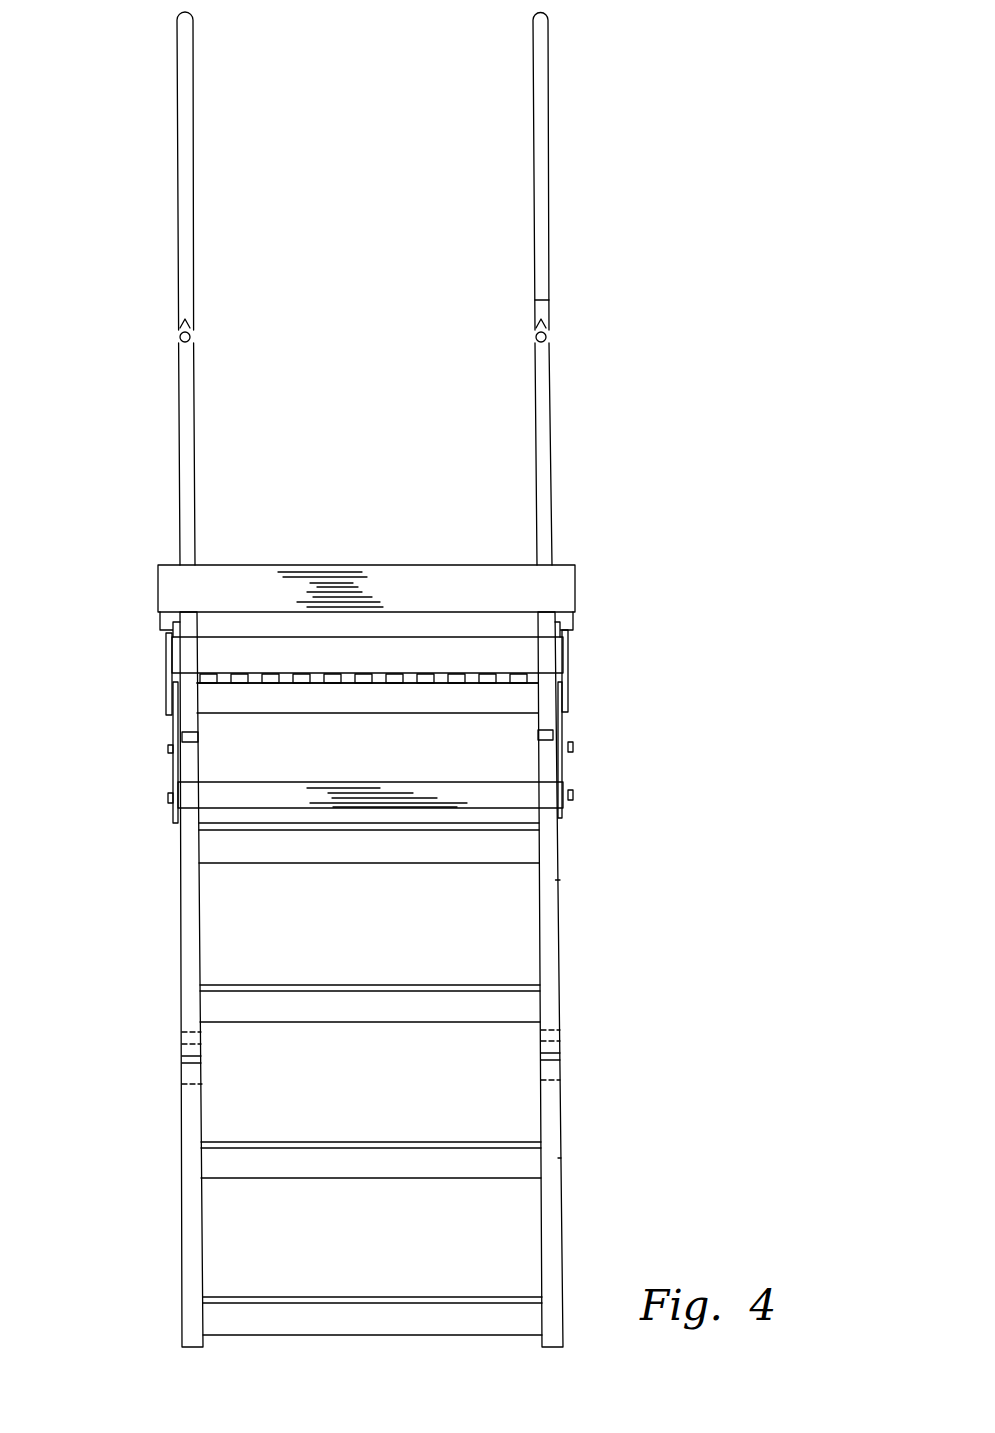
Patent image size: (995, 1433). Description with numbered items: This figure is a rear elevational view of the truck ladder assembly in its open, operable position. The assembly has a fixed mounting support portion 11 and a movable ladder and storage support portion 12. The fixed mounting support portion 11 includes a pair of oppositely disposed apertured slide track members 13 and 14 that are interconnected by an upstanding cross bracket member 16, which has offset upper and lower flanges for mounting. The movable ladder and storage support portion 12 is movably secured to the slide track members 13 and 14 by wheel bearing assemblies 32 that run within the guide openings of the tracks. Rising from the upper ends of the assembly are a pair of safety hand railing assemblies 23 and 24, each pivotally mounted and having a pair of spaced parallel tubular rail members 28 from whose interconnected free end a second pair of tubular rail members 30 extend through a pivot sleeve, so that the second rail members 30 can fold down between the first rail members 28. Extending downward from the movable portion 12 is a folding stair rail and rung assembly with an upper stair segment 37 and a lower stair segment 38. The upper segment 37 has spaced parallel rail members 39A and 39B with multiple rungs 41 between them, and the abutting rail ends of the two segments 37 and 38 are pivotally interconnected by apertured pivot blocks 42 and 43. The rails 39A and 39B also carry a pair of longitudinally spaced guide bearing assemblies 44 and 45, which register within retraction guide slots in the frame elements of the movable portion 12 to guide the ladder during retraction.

The fixed mounting support portion 11 is at (146, 676).
The movable ladder and storage support portion 12 is at (144, 800).
The slide track member 13 is at (163, 629).
The slide track member 14 is at (565, 628).
The cross bracket member 16 is at (557, 592).
The safety hand railing assembly 23 is at (586, 299).
The safety hand railing assembly 24 is at (166, 277).
The tubular rail member 28 is at (186, 417).
The second tubular rail member 30 is at (185, 207).
The wheel bearing assembly 32 is at (583, 673).
The upper stair segment 37 is at (572, 880).
The stair segment 38 is at (572, 1157).
The rail member 39A is at (551, 960).
The rail member 39B is at (194, 947).
The rung 41 is at (360, 848).
The apertured pivot block 42 is at (551, 1041).
The apertured pivot block 43 is at (195, 1044).
The guide bearing assembly 44 is at (573, 748).
The guide bearing assembly 45 is at (573, 798).